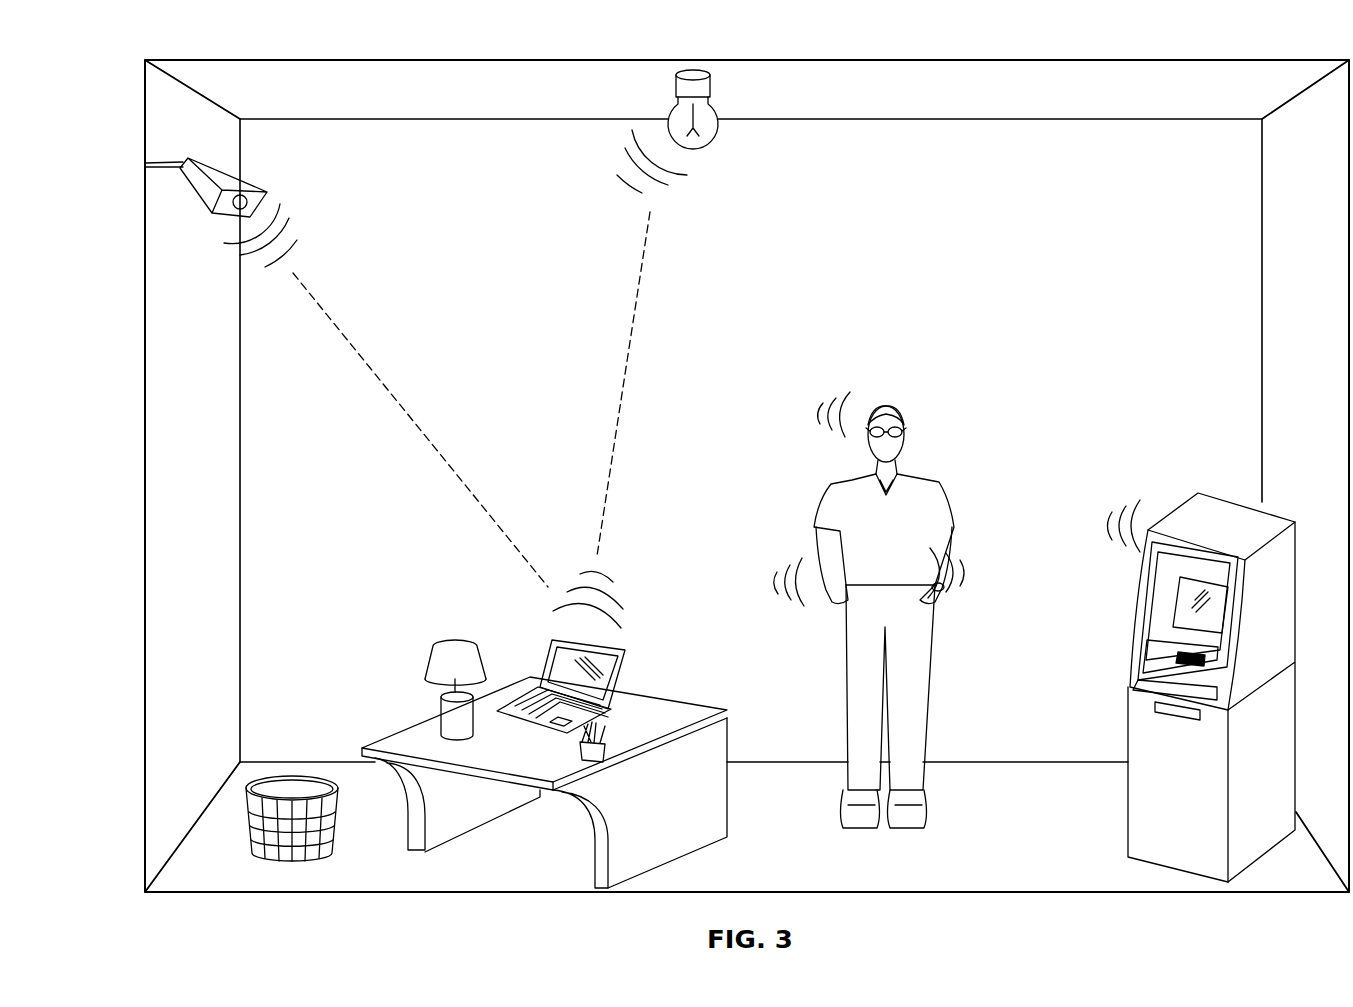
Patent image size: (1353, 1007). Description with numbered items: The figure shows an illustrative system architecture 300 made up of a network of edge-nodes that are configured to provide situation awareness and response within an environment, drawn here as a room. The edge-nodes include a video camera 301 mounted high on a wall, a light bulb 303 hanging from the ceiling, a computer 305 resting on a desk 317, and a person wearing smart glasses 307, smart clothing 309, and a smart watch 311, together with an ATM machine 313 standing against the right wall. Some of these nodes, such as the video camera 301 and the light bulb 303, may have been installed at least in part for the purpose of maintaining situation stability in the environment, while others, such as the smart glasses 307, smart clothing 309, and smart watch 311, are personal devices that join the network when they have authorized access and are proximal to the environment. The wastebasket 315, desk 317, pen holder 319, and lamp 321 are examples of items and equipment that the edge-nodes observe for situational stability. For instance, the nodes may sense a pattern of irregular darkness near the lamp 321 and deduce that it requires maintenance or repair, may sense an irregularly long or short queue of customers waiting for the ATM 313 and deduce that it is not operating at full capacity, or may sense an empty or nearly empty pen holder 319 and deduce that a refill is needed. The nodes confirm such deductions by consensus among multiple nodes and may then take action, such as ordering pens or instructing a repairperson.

The system architecture 300 is at (218, 58).
The video camera 301 is at (230, 173).
The light bulb 303 is at (718, 135).
The computer 305 is at (625, 662).
The smart glasses 307 is at (898, 430).
The smart clothing 309 is at (926, 495).
The smart watch 311 is at (941, 590).
The ATM machine 313 is at (1127, 703).
The wastebasket 315 is at (285, 790).
The desk 317 is at (717, 747).
The pen holder 319 is at (608, 743).
The lamp 321 is at (460, 640).